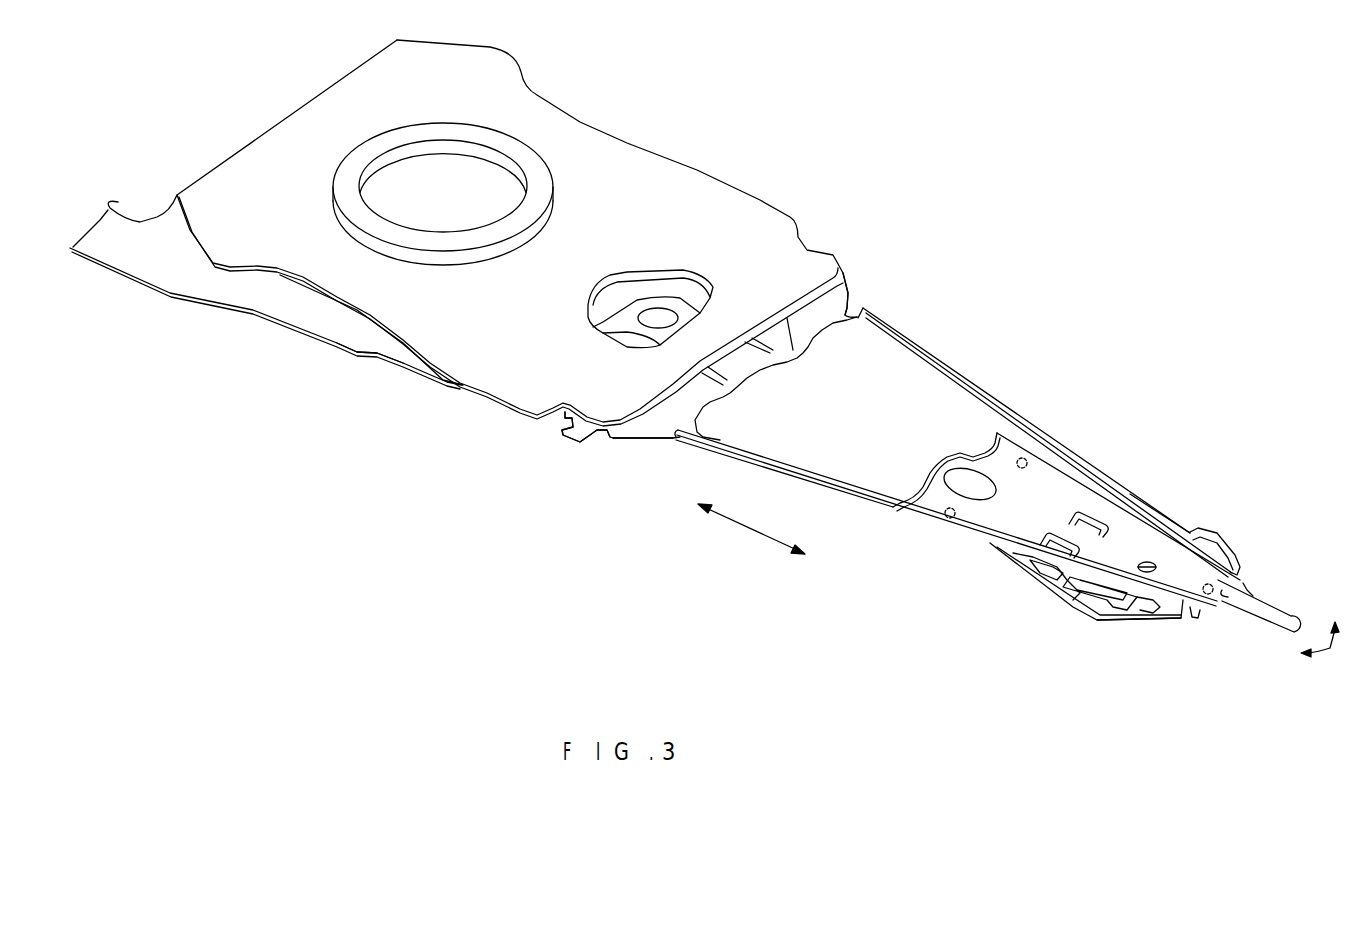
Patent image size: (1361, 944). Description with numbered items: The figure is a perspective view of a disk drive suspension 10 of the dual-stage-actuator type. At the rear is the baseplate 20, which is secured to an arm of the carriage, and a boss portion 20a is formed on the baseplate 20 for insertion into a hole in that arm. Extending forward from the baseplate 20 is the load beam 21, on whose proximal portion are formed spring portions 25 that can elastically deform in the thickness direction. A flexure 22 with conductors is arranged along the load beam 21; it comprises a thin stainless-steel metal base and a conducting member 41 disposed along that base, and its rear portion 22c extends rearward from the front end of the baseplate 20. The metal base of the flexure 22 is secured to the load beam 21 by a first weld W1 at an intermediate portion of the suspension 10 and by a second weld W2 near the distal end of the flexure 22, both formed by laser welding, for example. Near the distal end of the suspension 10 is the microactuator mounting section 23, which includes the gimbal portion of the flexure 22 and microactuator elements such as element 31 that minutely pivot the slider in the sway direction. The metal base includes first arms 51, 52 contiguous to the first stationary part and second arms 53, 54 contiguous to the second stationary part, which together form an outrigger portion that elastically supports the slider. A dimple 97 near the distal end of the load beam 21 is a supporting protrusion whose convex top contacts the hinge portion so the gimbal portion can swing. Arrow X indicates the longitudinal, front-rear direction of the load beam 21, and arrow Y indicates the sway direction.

The suspension 10 is at (922, 120).
The baseplate 20 is at (630, 167).
The boss portion 20a is at (523, 158).
The load beam 21 is at (1053, 490).
The flexure 22 is at (1157, 503).
The rear portion 22c is at (273, 307).
The microactuator mounting section 23 is at (1058, 627).
The spring portions 25 is at (837, 299).
The microactuator element 31 is at (1125, 600).
The conducting member 41 is at (365, 370).
The first arm 51 is at (1030, 572).
The first arm 52 is at (1160, 523).
The second arm 53 is at (1157, 620).
The second arm 54 is at (1222, 540).
The dimple 97 is at (1148, 562).
The first weld W1 is at (1022, 460).
The second weld W2 is at (1215, 583).
The arrow X is at (733, 520).
The arrow Y is at (1330, 648).